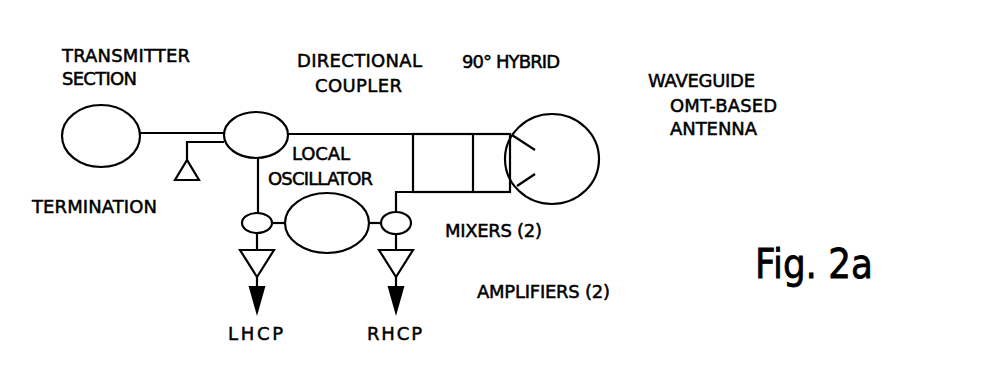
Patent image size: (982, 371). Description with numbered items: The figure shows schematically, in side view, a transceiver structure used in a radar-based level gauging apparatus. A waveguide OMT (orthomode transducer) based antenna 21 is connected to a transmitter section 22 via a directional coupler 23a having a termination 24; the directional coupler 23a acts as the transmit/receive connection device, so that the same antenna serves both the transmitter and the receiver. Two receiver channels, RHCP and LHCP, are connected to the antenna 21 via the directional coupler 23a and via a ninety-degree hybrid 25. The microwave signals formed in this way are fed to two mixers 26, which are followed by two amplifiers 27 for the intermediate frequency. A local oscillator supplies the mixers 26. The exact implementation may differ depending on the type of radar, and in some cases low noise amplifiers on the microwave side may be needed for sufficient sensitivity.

The waveguide OMT based antenna 21 is at (600, 156).
The transmitter section 22 is at (140, 123).
The directional coupler 23a is at (243, 112).
The termination 24 is at (187, 180).
The 90° hybrid 25 is at (428, 134).
The mixers 26 is at (242, 222).
The amplifiers 27 is at (241, 252).